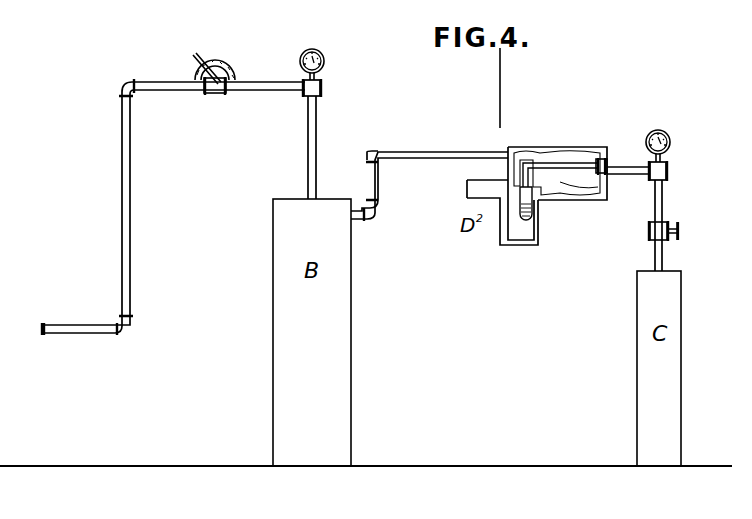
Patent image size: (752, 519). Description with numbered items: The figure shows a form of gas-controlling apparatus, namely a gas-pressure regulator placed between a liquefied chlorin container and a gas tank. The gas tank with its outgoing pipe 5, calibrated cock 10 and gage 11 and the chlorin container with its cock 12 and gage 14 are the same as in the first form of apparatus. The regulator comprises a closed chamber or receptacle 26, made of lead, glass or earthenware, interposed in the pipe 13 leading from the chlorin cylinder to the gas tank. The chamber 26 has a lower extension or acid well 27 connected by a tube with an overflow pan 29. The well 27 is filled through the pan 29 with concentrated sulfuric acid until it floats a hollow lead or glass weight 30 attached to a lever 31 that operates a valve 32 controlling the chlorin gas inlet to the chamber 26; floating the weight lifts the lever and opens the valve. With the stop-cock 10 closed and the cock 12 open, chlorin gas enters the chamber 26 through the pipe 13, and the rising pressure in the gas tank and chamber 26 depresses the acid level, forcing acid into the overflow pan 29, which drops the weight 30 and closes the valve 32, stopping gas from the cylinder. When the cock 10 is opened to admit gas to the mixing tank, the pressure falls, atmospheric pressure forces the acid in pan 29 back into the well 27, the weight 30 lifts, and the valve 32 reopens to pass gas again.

The outgoing pipe 5 is at (317, 123).
The calibrated cock 10 is at (230, 77).
The gage 11 is at (330, 64).
The cock 12 is at (668, 228).
The pipe 13 is at (467, 152).
The gage 14 is at (668, 161).
The closed chamber 26 is at (604, 189).
The acid well 27 is at (536, 238).
The overflow pan 29 is at (478, 191).
The hollow weight 30 is at (534, 215).
The lever 31 is at (551, 163).
The valve 32 is at (609, 164).